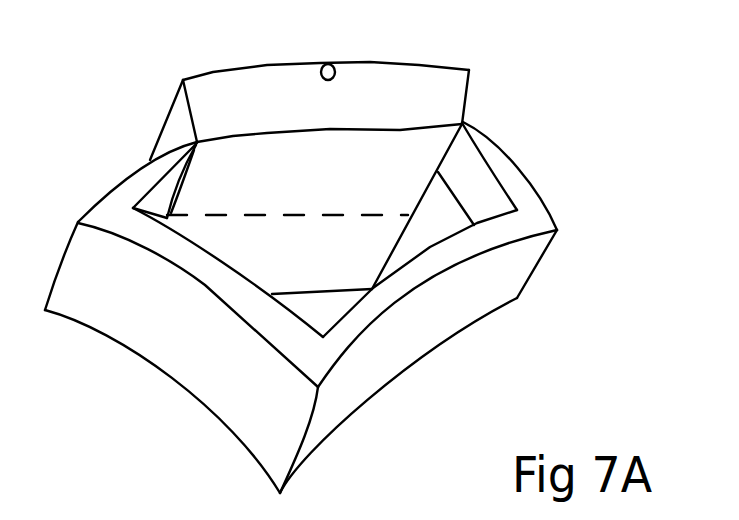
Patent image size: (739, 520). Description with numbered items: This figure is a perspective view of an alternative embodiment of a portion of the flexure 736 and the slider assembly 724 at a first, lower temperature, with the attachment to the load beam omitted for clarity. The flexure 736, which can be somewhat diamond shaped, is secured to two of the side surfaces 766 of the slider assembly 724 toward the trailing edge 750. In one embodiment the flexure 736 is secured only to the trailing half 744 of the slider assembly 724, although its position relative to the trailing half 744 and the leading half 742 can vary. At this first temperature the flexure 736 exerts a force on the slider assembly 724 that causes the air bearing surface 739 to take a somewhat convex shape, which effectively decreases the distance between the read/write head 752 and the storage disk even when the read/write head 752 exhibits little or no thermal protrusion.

The flexure 736 is at (486, 298).
The air bearing surface 739 is at (215, 72).
The trailing edge 750 is at (437, 98).
The read/write head 752 is at (334, 64).
The side surfaces 766 is at (182, 127).
The slider assembly 724 is at (402, 165).
The trailing half 744 is at (393, 196).
The leading half 742 is at (363, 250).